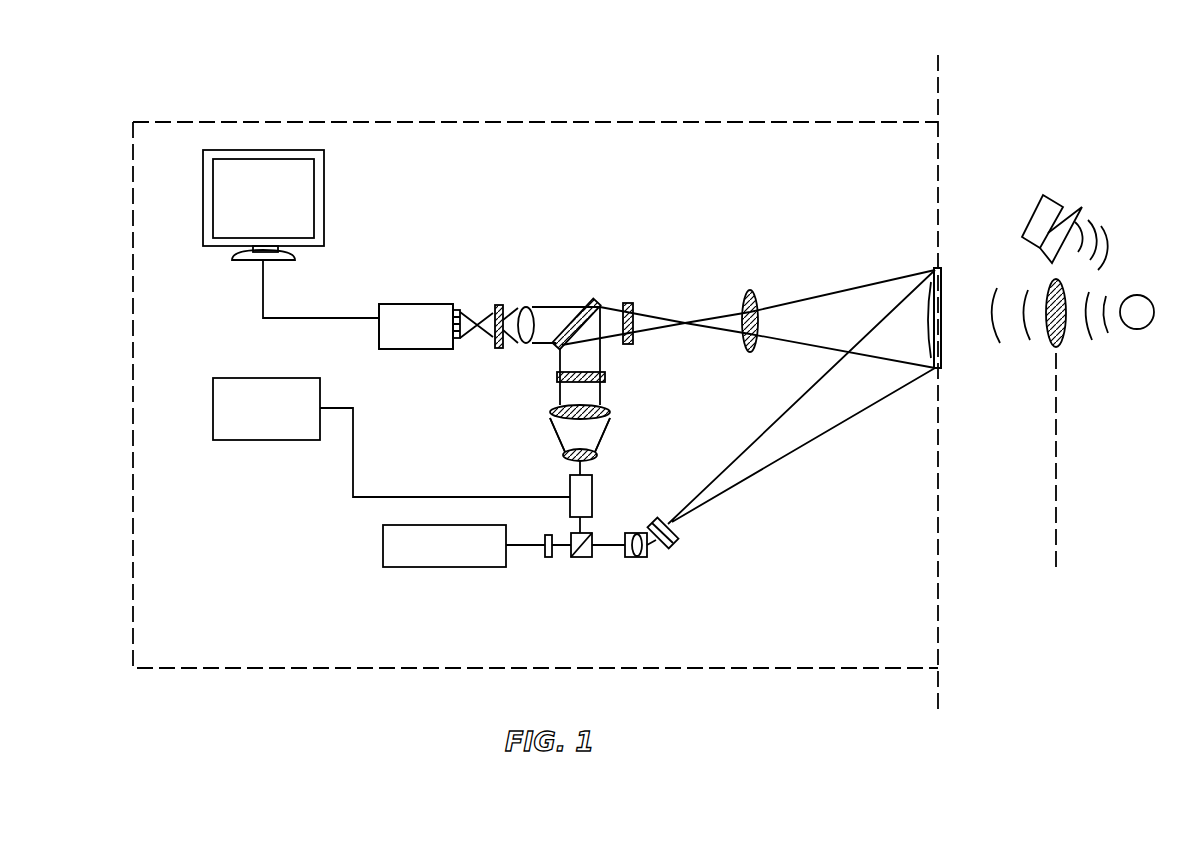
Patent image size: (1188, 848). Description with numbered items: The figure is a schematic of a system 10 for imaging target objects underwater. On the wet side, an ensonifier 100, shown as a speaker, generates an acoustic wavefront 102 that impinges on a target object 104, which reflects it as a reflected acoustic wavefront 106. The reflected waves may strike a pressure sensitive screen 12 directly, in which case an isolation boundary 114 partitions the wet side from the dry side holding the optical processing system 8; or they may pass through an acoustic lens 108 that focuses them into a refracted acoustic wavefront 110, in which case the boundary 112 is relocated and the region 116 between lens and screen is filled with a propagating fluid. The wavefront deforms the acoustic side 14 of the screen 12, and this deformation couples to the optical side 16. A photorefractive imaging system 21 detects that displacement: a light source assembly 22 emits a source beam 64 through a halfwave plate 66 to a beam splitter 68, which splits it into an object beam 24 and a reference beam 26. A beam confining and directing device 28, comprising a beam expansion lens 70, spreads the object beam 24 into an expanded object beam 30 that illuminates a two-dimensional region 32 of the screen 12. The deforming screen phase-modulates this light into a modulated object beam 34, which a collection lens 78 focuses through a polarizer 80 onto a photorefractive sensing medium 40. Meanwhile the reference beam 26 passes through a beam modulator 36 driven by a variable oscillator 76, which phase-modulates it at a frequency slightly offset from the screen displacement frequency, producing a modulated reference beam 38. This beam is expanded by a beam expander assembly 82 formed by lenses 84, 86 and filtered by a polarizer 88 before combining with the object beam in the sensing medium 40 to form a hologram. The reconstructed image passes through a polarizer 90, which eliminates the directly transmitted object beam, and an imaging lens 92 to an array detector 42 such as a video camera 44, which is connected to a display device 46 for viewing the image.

The optical processing system 8 is at (405, 122).
The system 10 is at (812, 68).
The screen 12 is at (935, 268).
The acoustic side 14 is at (942, 305).
The optical side 16 is at (936, 366).
The photorefractive imaging system 21 is at (552, 250).
The light source assembly 22 is at (431, 582).
The object beam 24 is at (608, 548).
The reference beam 26 is at (585, 528).
The beam confining and directing device 28 is at (675, 548).
The expanded object beam 30 is at (740, 458).
The region 32 is at (916, 320).
The modulated object beam 34 is at (805, 345).
The beam modulator 36 is at (592, 497).
The modulated reference beam 38 is at (583, 468).
The photorefractive sensing medium 40 is at (591, 296).
The array detector 42 is at (404, 298).
The video camera 44 is at (428, 349).
The display device 46 is at (203, 195).
The source beam 64 is at (530, 548).
The halfwave plate 66 is at (546, 536).
The beam splitter 68 is at (588, 556).
The beam expansion lens 70 is at (640, 558).
The variable oscillator 76 is at (213, 420).
The collection lens 78 is at (750, 290).
The polarizer 80 is at (632, 302).
The beam expander assembly 82 is at (538, 408).
The lens 84 is at (598, 455).
The lens 86 is at (612, 412).
The polarizer 88 is at (605, 377).
The polarizer 90 is at (498, 304).
The imaging lens 92 is at (527, 346).
The ensonifier 100 is at (1047, 195).
The acoustic wavefront 102 is at (1104, 211).
The target object 104 is at (1138, 330).
The reflected acoustic wavefront 106 is at (1100, 353).
The acoustic lens 108 is at (1050, 345).
The refracted acoustic wavefront 110 is at (999, 360).
The boundary 112 is at (1056, 505).
The isolation boundary 114 is at (938, 485).
The region 116 is at (1000, 530).